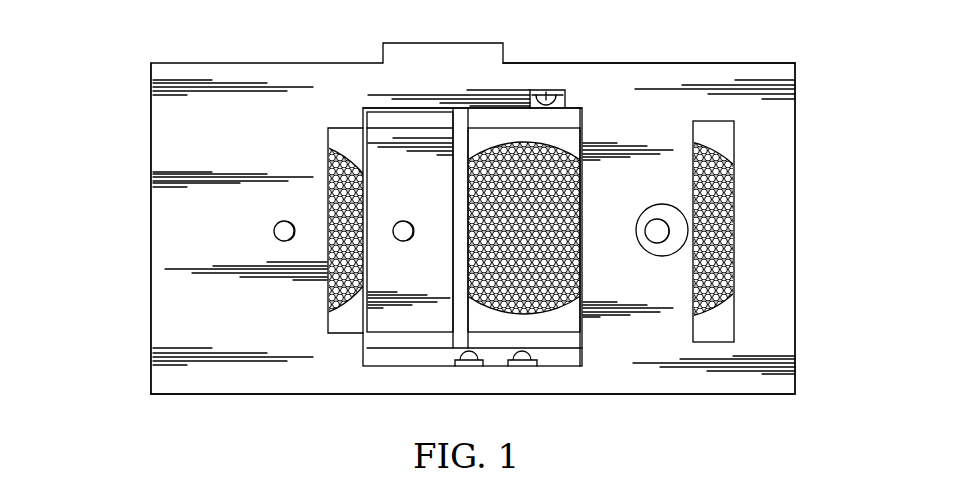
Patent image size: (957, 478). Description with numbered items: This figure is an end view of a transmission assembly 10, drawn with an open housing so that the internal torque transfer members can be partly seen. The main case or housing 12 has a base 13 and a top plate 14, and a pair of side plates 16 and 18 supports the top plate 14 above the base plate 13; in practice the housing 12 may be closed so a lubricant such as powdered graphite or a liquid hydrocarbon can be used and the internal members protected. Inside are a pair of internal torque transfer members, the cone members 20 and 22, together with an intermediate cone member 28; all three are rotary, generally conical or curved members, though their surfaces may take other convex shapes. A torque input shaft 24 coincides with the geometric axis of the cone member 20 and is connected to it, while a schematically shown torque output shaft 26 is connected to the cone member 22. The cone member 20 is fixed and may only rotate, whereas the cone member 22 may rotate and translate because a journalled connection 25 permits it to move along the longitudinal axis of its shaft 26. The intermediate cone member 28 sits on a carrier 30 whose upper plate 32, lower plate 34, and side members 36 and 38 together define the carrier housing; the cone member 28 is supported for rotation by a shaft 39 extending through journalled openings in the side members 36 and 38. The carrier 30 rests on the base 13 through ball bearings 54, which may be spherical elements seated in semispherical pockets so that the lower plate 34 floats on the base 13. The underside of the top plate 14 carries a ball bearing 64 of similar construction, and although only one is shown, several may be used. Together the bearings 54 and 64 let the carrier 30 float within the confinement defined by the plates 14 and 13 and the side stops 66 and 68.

The transmission assembly 10 is at (725, 40).
The housing 12 is at (781, 115).
The base 13 is at (677, 378).
The top plate 14 is at (652, 75).
The side plate 16 is at (780, 230).
The side plate 18 is at (165, 207).
The cone member 20 is at (733, 262).
The cone member 22 is at (342, 306).
The torque input shaft 24 is at (655, 236).
The journalled connection 25 is at (662, 204).
The torque output shaft 26 is at (273, 228).
The intermediate cone member 28 is at (527, 290).
The carrier 30 is at (440, 322).
The upper plate 32 is at (496, 110).
The lower plate 34 is at (565, 343).
The side member 36 is at (402, 323).
The side member 38 is at (574, 110).
The shaft 39 is at (407, 240).
The ball bearings 54 is at (472, 367).
The ball bearing 64 is at (548, 105).
The side stop 66 is at (363, 118).
The side stop 68 is at (583, 118).